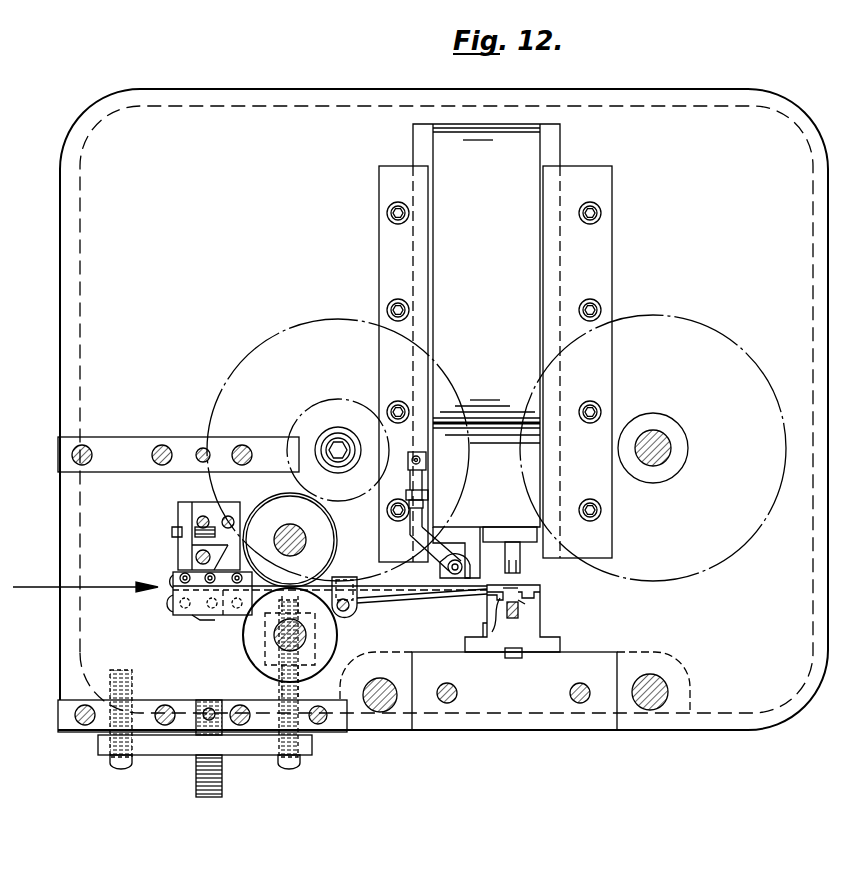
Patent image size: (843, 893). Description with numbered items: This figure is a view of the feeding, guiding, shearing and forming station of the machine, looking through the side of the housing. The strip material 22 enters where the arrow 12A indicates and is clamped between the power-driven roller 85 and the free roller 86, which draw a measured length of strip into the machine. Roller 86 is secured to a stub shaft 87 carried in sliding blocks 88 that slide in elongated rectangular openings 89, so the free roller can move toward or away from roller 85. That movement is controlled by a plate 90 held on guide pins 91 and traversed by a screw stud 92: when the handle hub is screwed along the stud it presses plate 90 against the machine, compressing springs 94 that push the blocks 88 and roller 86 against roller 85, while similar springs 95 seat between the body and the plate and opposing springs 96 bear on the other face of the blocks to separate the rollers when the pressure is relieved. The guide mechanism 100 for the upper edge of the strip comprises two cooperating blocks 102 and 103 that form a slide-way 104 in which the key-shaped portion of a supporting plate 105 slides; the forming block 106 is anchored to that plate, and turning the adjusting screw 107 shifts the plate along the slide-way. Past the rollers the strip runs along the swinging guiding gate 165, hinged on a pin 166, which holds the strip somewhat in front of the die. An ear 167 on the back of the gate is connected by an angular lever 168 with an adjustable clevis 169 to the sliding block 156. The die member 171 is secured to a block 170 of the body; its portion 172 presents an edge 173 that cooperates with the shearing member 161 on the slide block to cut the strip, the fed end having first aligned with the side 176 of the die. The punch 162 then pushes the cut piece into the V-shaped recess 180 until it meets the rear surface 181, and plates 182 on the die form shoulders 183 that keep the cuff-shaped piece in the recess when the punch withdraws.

The arrow 12A is at (81, 578).
The strip material 22 is at (338, 580).
The roller 85 is at (338, 522).
The free roller 86 is at (322, 640).
The stub shaft 87 is at (280, 633).
The sliding blocks 88 is at (262, 648).
The rectangular openings 89 is at (306, 677).
The plate 90 is at (312, 746).
The guide pins 91 is at (118, 768).
The screw stud 92 is at (223, 777).
The springs 94 is at (282, 690).
The springs 95 is at (122, 670).
The springs 96 is at (274, 615).
The guide mechanism 100 is at (141, 598).
The block 102 is at (205, 502).
The block 103 is at (183, 505).
The slide-way 104 is at (244, 546).
The supporting plate 105 is at (222, 614).
The forming block 106 is at (175, 578).
The adjusting screw 107 is at (196, 557).
The sliding block 156 is at (453, 262).
The shearing member 161 is at (457, 540).
The punch 162 is at (510, 540).
The guiding gate 165 is at (420, 598).
The pin 166 is at (372, 603).
The ear 167 is at (448, 571).
The angular lever 168 is at (415, 525).
The adjustable clevis 169 is at (418, 483).
The block 170 is at (525, 700).
The die member 171 is at (556, 643).
The portion 172 is at (486, 623).
The edge 173 is at (487, 598).
The side 176 is at (541, 594).
The V-shaped recess 180 is at (520, 606).
The rear surface 181 is at (515, 620).
The plates 182 is at (518, 590).
The shoulders 183 is at (494, 632).